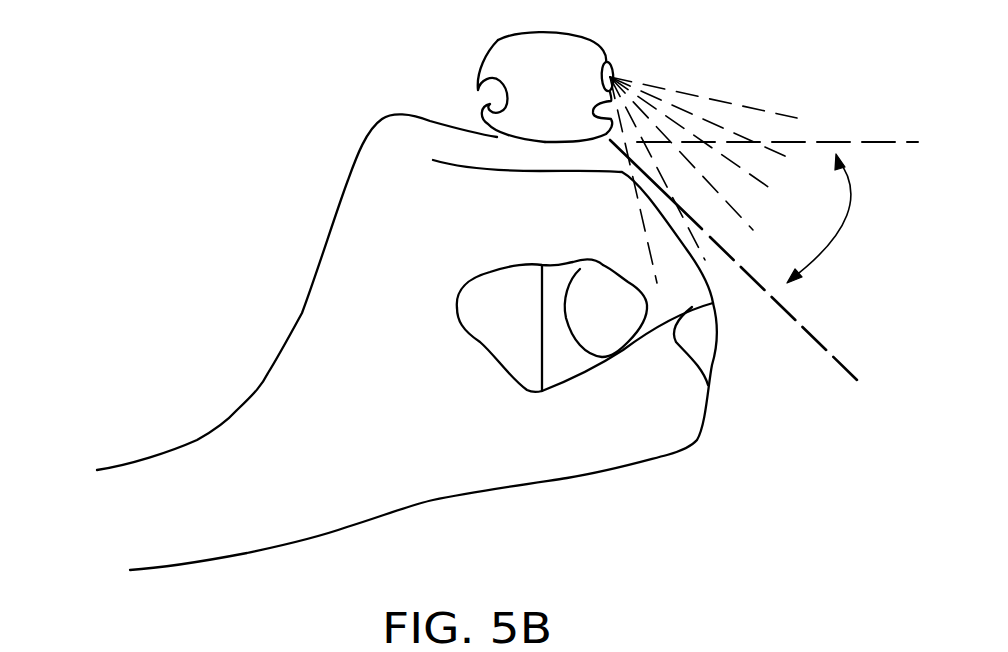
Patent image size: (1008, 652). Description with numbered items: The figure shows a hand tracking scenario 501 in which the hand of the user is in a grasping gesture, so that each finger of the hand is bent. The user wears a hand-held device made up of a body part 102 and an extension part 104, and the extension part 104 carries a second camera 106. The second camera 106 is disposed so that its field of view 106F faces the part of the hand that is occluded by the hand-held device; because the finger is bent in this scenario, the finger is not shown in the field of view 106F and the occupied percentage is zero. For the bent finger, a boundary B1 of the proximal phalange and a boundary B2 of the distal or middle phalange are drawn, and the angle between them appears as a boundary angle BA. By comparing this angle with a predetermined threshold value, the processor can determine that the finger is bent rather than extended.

The body part 102 is at (607, 332).
The extension part 104 is at (483, 50).
The second camera 106 is at (605, 60).
The field of view 106F is at (721, 102).
The boundary of the proximal phalange B1 is at (862, 142).
The boundary of the distal phalange B2 is at (838, 364).
The boundary angle BA is at (829, 218).
The hand tracking scenario 501 is at (826, 553).